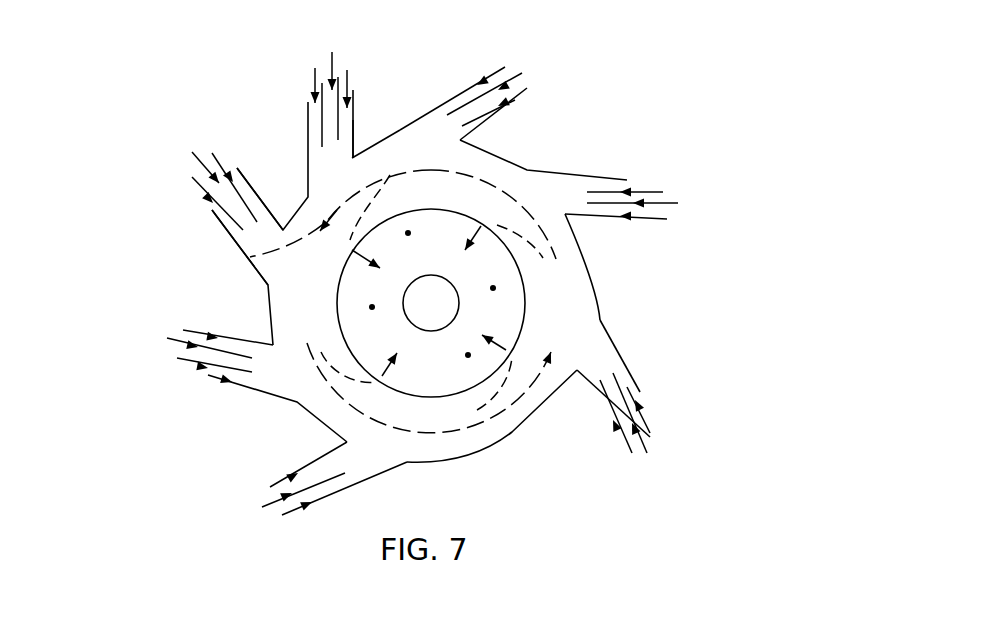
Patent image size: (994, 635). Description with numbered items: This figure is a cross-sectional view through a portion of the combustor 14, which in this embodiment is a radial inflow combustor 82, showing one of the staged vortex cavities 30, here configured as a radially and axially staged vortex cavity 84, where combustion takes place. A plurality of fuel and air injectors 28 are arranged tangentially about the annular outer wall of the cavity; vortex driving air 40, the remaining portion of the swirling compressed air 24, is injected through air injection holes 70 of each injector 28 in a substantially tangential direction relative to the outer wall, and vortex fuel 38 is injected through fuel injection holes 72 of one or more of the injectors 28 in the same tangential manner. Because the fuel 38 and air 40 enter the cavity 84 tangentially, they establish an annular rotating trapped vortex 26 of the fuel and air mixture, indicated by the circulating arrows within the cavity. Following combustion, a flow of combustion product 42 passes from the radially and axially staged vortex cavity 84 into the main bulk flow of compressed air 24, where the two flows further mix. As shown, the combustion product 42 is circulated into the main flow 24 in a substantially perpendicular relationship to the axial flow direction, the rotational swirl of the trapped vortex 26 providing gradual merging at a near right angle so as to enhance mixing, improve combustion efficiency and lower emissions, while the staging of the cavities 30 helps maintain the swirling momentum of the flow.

The combustor 14 is at (513, 303).
The radial inflow combustor 82 is at (523, 297).
The swirling compressed air 24 is at (372, 307).
The annular rotating trapped vortex 26 is at (249, 257).
The fuel and air injector 28 is at (400, 130).
The vortex cavity 30 is at (569, 180).
The radially and axially staged vortex cavity 84 is at (506, 158).
The fuel 38 is at (519, 72).
The air 40 is at (498, 68).
The flow of combustion product 42 is at (348, 242).
The air injection hole 70 is at (258, 197).
The fuel injection hole 72 is at (238, 204).